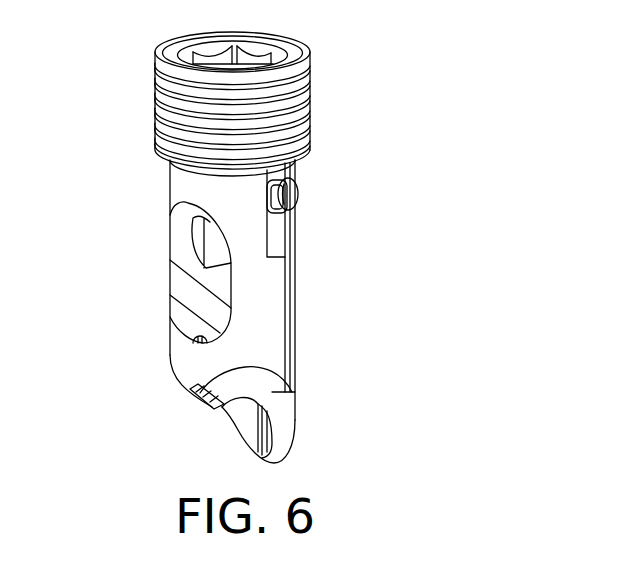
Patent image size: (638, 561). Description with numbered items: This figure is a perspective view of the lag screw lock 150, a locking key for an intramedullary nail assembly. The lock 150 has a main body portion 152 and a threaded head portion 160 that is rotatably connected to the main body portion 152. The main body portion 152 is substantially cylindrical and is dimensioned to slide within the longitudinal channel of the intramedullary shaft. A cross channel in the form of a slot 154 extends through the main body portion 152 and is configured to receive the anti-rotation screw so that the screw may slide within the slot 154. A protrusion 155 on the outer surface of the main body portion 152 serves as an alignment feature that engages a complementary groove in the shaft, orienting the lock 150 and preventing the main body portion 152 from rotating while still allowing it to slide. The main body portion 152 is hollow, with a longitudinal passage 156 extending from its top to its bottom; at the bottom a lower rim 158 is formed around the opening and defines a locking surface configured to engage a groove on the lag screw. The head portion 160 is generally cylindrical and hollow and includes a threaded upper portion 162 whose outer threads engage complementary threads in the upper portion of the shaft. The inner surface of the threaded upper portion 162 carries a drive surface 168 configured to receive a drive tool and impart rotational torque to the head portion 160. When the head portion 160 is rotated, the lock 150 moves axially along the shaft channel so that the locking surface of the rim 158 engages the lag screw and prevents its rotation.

The lag screw lock 150 is at (400, 250).
The main body portion 152 is at (272, 325).
The slot 154 is at (182, 249).
The protrusion 155 is at (298, 192).
The longitudinal passage 156 is at (245, 418).
The lower rim 158 is at (278, 448).
The threaded head portion 160 is at (310, 77).
The threaded upper portion 162 is at (283, 108).
The drive surface 168 is at (216, 58).